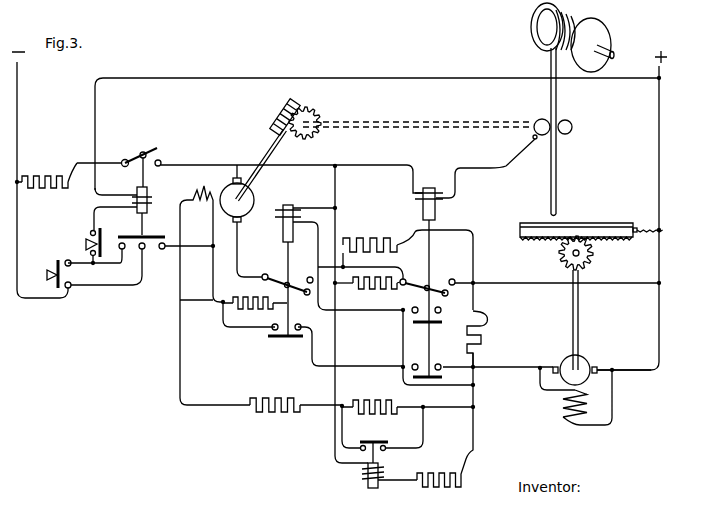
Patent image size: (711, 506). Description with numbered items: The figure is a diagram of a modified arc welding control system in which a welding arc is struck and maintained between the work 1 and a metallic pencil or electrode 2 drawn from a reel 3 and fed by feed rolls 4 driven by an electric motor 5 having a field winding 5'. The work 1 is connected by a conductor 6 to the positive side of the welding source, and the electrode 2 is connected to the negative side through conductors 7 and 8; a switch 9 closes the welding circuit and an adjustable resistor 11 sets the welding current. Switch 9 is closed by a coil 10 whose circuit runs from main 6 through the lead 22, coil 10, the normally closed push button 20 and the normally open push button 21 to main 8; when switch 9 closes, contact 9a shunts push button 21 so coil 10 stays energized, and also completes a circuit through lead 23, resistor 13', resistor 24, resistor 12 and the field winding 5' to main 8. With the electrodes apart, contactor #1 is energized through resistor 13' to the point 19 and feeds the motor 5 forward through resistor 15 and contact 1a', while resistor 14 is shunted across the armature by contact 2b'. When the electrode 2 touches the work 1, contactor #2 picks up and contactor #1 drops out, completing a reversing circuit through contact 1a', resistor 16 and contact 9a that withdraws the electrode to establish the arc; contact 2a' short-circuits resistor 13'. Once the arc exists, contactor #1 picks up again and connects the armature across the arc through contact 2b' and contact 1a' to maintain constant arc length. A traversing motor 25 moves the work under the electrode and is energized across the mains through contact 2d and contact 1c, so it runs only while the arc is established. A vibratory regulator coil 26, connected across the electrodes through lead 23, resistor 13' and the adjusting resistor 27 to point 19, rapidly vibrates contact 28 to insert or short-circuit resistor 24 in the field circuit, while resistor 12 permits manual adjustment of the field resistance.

The work 1 is at (578, 227).
The contact of contactor #1 1a' is at (288, 276).
The contact of contactor #1 1c is at (277, 340).
The metallic pencil or electrode 2 is at (554, 180).
The contact of contactor #2 2a' is at (433, 327).
The contact of contactor #2 2b' is at (429, 277).
The contact of contactor #2 2d is at (430, 382).
The reel 3 is at (600, 33).
The feed rolls 4 is at (572, 126).
The electric motor 5 is at (241, 221).
The field winding 5' is at (201, 244).
The conductor or main 6 is at (662, 118).
The conductor 7 is at (470, 167).
The conductor or main 8 is at (18, 115).
The switch 9 is at (147, 142).
The contact 9a is at (166, 231).
The coil 10 is at (150, 197).
The adjustable resistor 11 is at (44, 192).
The resistance 12 is at (258, 411).
The resistor 13' is at (492, 338).
The resistor 14 is at (364, 288).
The resistor 15 is at (357, 237).
The resistor 16 is at (247, 297).
The point 19 is at (240, 162).
The push button 20 is at (102, 238).
The push button 21 is at (50, 275).
The lead 22 is at (404, 79).
The lead 23 is at (607, 288).
The resistor 24 is at (356, 400).
The motor 25 is at (586, 364).
The coil 26 is at (366, 478).
The resistor 27 is at (422, 472).
The contact 28 is at (388, 443).